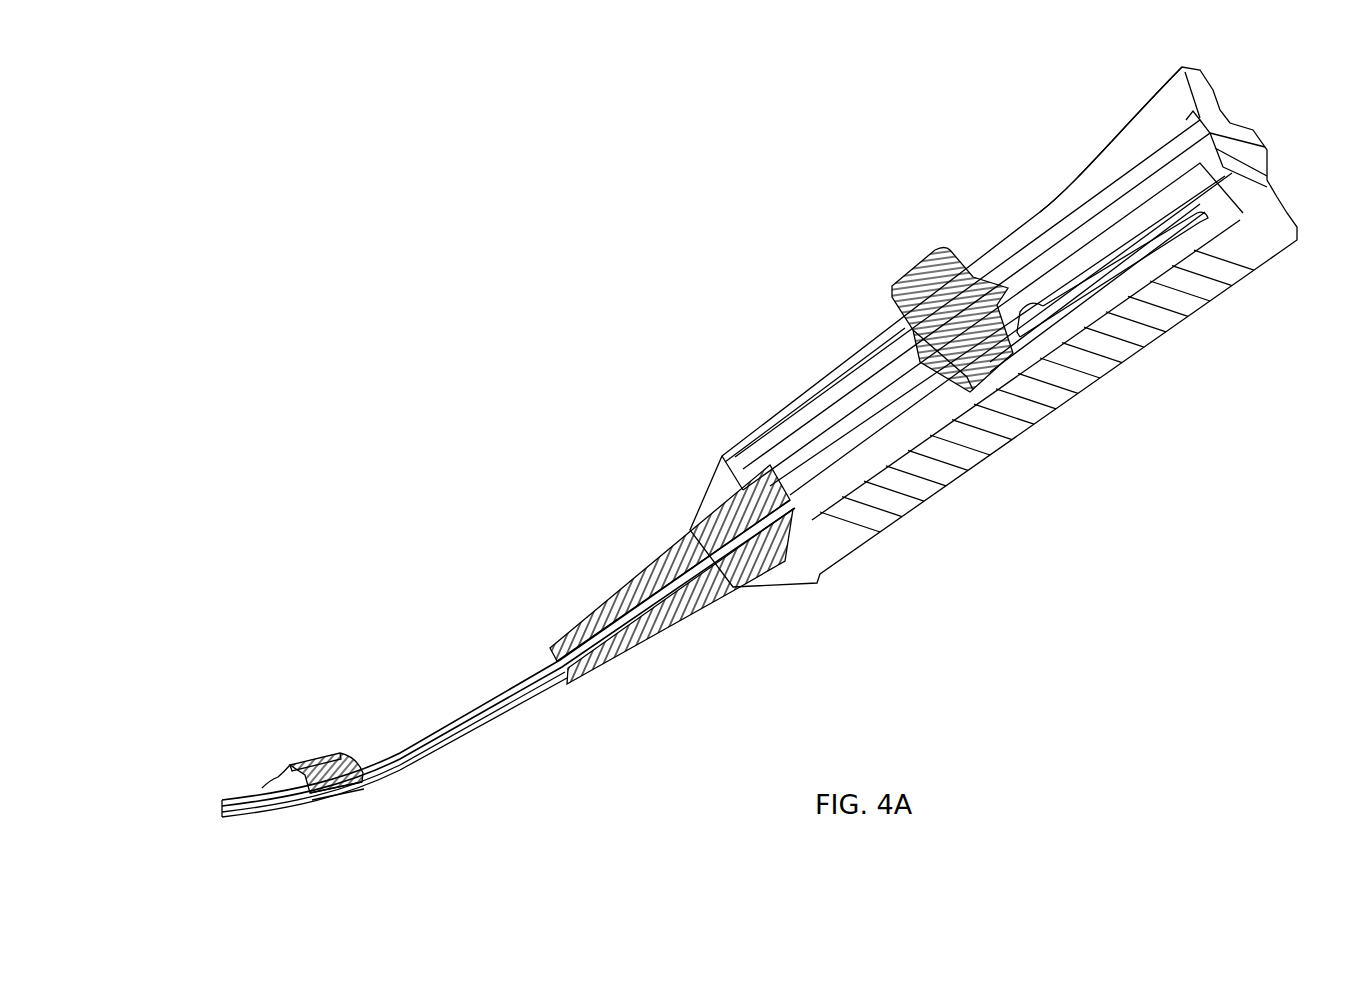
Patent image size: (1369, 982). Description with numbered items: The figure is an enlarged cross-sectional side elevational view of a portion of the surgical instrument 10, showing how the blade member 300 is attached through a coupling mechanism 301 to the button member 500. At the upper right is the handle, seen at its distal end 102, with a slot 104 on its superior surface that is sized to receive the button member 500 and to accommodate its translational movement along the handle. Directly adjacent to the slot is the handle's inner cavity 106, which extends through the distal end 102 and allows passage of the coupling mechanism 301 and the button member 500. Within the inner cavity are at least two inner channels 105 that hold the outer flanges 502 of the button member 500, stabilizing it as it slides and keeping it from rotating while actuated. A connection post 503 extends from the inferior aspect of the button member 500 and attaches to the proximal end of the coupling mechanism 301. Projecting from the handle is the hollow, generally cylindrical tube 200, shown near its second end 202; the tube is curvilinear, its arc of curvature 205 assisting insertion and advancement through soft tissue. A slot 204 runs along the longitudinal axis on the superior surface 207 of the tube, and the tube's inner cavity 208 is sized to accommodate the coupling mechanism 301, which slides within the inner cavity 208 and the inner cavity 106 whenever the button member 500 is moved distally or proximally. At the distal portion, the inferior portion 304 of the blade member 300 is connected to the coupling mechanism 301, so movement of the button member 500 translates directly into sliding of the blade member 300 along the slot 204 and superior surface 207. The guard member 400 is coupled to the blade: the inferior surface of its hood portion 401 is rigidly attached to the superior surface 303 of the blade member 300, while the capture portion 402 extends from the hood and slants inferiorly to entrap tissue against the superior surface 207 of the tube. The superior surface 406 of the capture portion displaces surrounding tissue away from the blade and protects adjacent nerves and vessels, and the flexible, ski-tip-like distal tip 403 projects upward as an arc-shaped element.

The surgical instrument 10 is at (586, 272).
The distal end 102 is at (733, 593).
The slot 104 is at (1163, 103).
The inner channels 105 is at (1067, 247).
The inner cavity 106 is at (1148, 215).
The tube 200 is at (240, 826).
The second end 202 is at (667, 553).
The slot 204 is at (400, 755).
The arc of curvature 205 is at (424, 682).
The superior surface 207 is at (500, 697).
The inner cavity 208 is at (515, 710).
The blade member 300 is at (350, 811).
The coupling mechanism 301 is at (893, 423).
The superior surface 303 is at (360, 773).
The inferior portion 304 is at (360, 780).
The guard member 400 is at (280, 752).
The hood portion 401 is at (333, 753).
The capture portion 402 is at (293, 803).
The distal tip 403 is at (262, 788).
The superior surface 406 is at (303, 763).
The button member 500 is at (905, 268).
The outer flanges 502 is at (993, 290).
The connection post 503 is at (1035, 306).